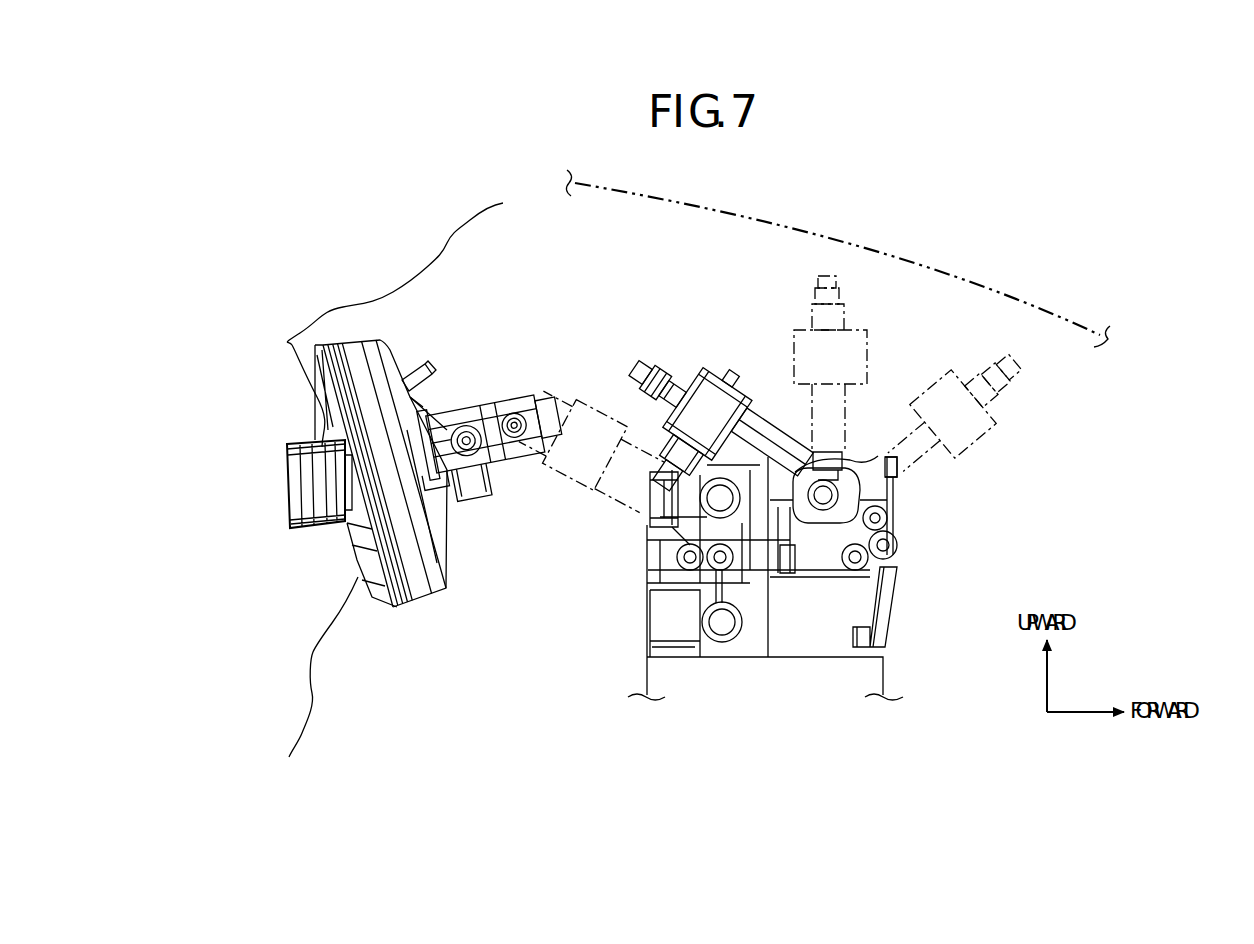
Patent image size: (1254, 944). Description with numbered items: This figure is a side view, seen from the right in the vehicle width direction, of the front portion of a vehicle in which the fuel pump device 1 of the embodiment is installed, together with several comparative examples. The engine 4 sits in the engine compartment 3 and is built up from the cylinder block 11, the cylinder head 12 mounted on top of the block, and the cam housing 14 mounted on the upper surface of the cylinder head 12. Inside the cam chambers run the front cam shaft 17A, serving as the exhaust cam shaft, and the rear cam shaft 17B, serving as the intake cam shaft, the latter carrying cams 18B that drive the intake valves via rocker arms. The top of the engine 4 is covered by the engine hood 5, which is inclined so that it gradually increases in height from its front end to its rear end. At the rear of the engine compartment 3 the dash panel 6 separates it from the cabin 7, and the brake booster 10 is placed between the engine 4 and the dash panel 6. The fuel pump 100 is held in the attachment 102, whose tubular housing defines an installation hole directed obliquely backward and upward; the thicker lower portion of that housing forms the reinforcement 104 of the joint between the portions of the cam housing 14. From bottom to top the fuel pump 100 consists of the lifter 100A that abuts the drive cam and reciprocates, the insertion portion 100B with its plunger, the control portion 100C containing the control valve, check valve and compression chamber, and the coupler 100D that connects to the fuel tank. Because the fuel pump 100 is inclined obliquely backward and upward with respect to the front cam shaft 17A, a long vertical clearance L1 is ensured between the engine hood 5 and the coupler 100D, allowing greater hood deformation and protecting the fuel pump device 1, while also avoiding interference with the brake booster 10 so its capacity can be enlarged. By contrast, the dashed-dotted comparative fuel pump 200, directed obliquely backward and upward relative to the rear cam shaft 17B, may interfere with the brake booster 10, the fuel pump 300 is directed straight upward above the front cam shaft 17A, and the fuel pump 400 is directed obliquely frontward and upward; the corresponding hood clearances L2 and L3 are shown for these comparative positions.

The fuel pump device 1 is at (758, 333).
The engine compartment 3 is at (928, 297).
The engine 4 is at (816, 578).
The engine hood 5 is at (885, 252).
The dash panel 6 is at (310, 668).
The cabin 7 is at (237, 551).
The brake booster 10 is at (388, 341).
The cylinder block 11 is at (895, 676).
The cylinder head 12 is at (898, 603).
The cam housing 14 is at (892, 479).
The front cam shaft 17A is at (836, 525).
The rear cam shaft 17B is at (667, 527).
The cams 18B is at (677, 540).
The fuel pump 100 is at (696, 390).
The lifter 100A is at (806, 445).
The insertion portion 100B is at (787, 588).
The control portion 100C is at (707, 387).
The coupler 100D is at (660, 408).
The attachment 102 is at (774, 420).
The reinforcement 104 is at (762, 617).
The fuel pump (first comparison example) 200 is at (581, 397).
The fuel pump (second comparison example) 300 is at (874, 346).
The fuel pump (third comparison example) 400 is at (979, 447).
The clearance L1 is at (643, 194).
The distance L2 is at (828, 242).
The distance L3 is at (1010, 295).